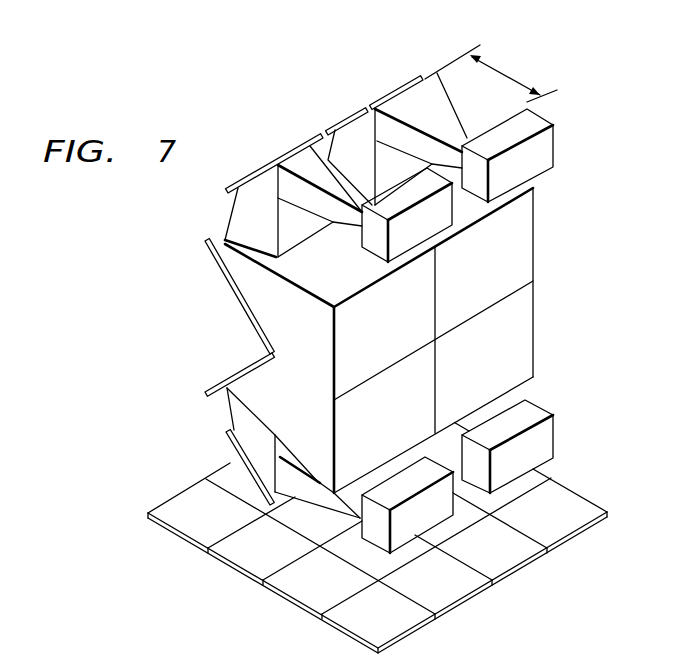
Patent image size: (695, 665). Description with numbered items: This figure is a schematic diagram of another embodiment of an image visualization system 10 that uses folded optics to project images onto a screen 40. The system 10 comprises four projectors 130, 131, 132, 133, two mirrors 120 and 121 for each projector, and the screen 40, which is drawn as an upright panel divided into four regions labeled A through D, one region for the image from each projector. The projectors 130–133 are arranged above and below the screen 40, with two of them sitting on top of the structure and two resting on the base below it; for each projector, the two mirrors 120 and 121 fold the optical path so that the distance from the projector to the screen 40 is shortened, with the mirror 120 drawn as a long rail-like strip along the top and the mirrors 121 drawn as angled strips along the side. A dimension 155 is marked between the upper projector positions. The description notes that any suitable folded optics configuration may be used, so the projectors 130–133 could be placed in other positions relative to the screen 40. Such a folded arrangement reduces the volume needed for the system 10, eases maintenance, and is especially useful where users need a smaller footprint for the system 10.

The image visualization system 10 is at (596, 580).
The screen 40 is at (333, 368).
The mirror 120 is at (274, 146).
The mirror 121 is at (226, 294).
The projector 130 is at (543, 150).
The projector 131 is at (538, 441).
The projector 132 is at (373, 243).
The projector 133 is at (420, 517).
The module spacing 155 is at (507, 76).